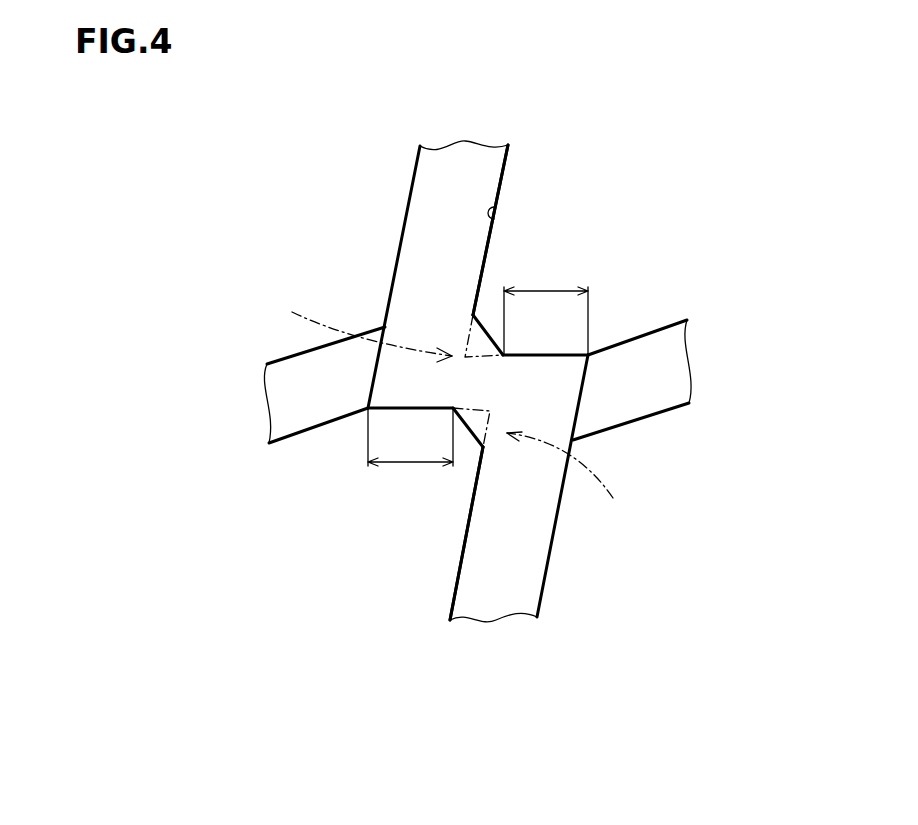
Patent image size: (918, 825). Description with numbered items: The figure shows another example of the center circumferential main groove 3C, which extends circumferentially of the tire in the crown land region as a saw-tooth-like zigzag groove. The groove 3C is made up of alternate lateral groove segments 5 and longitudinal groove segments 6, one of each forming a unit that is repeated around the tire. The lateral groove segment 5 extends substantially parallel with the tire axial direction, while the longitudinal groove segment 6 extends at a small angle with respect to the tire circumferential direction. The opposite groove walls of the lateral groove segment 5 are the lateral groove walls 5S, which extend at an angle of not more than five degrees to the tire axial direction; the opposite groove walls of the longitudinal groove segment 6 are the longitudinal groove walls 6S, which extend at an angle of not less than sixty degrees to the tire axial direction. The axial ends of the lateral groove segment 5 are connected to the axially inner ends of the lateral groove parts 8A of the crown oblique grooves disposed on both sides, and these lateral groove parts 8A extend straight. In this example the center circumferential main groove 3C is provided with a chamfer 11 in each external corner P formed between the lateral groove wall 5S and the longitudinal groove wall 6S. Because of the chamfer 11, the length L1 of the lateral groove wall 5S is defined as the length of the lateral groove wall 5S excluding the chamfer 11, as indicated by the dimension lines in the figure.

The center circumferential main groove 3C is at (457, 182).
The longitudinal groove segment 6 is at (430, 210).
The longitudinal groove wall 6S is at (493, 223).
The chamfer 11 is at (472, 332).
The lateral groove wall 5S is at (558, 358).
The lateral groove segment 5 is at (527, 370).
The lateral groove part 8A is at (293, 397).
The length of the lateral groove wall L1 is at (547, 290).
The external corner P is at (450, 413).